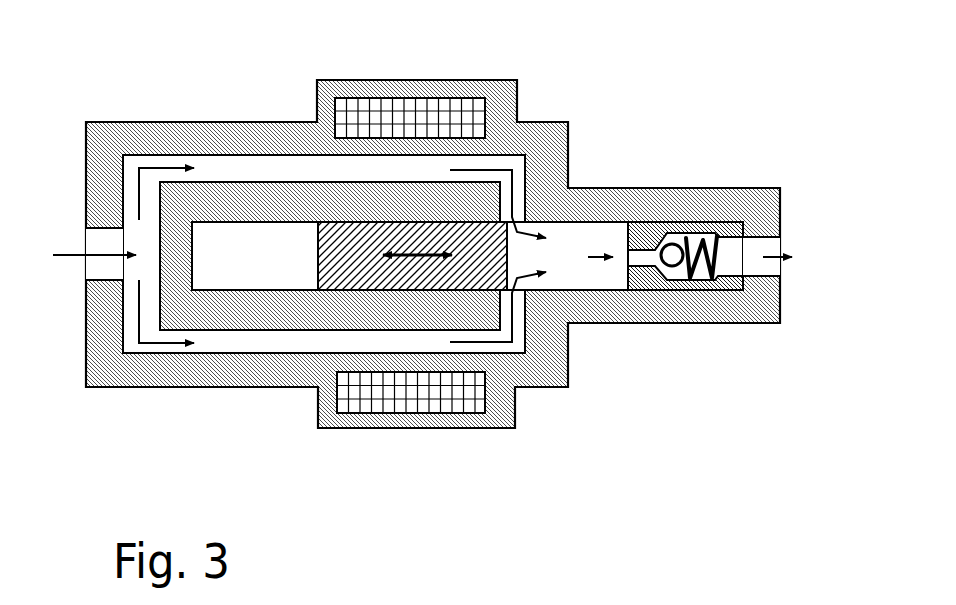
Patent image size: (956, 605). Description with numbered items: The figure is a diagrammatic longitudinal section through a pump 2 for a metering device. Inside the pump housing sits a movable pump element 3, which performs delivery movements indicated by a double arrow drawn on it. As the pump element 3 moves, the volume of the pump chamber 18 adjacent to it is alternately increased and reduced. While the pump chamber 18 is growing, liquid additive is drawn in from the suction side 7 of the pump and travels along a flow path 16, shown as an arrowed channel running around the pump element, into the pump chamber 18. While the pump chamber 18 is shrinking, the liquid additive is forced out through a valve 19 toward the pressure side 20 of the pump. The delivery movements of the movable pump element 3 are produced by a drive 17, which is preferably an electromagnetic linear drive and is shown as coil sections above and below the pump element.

The pump 2 is at (125, 94).
The movable pump element 3 is at (320, 226).
The suction side 7 is at (86, 232).
The flow path 16 is at (155, 337).
The drive 17 is at (383, 405).
The pump chamber 18 is at (612, 273).
The valve 19 is at (757, 196).
The pressure side 20 is at (783, 267).